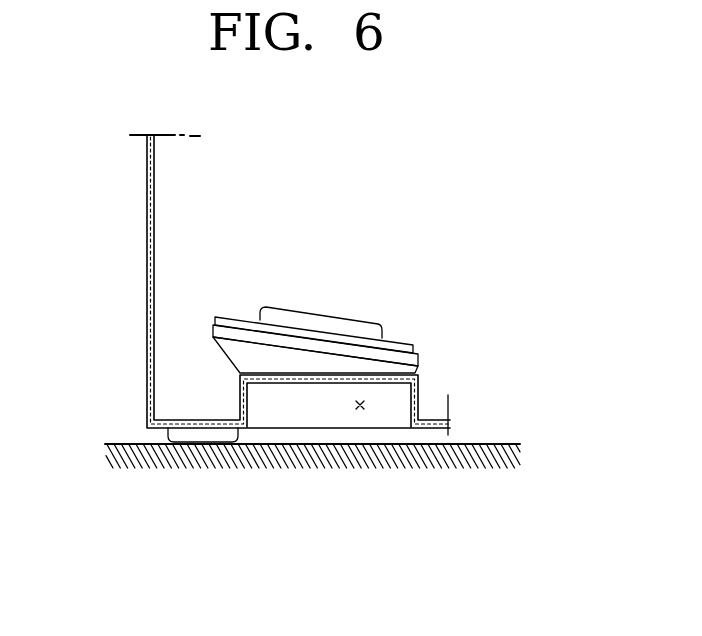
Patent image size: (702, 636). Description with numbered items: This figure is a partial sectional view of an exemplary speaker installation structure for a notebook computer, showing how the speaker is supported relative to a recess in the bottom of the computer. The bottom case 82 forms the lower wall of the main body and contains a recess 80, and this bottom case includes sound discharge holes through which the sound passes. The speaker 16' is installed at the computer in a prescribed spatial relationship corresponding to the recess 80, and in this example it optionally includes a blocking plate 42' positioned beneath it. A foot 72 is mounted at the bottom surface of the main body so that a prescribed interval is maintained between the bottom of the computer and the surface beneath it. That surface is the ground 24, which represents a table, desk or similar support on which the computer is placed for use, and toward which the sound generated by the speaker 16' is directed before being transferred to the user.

The bottom case 82 is at (147, 289).
The blocking plate 42' is at (315, 291).
The speaker 16' is at (315, 290).
The ground 24 is at (488, 444).
The foot 72 is at (195, 437).
The recess 80 is at (358, 412).